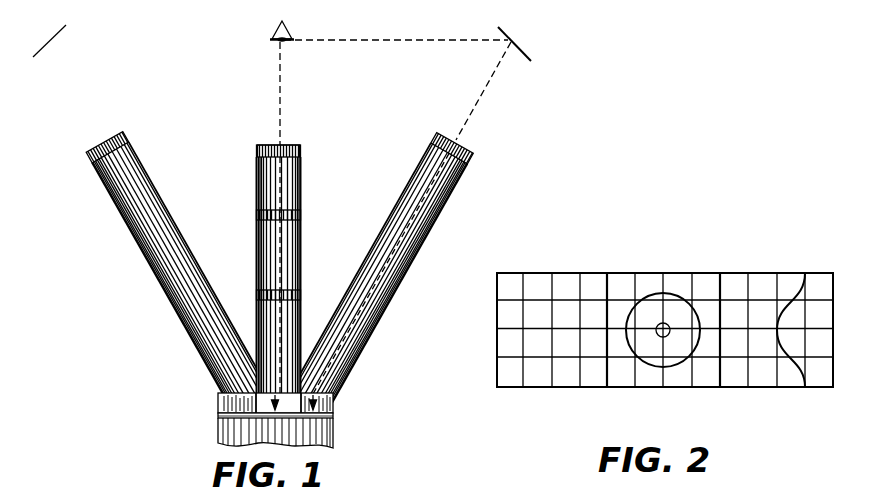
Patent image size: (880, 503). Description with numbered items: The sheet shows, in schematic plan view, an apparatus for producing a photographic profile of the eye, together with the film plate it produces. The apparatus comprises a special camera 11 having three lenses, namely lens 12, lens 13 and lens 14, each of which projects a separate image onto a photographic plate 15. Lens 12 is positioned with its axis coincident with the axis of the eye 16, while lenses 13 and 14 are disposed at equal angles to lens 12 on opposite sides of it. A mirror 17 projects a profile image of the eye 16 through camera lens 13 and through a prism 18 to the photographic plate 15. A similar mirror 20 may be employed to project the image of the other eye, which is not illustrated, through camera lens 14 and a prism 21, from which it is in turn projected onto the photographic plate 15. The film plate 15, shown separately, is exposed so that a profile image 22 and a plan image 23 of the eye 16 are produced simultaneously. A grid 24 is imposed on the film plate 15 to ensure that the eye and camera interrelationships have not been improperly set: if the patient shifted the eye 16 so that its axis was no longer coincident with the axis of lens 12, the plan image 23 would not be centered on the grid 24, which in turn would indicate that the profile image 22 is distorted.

In FIG. 1, the special camera 11 is at (203, 441).
In FIG. 1, the lens 12 is at (283, 256).
In FIG. 1, the lens 13 is at (427, 238).
In FIG. 1, the lens 14 is at (165, 237).
In FIG. 1, the photographic plate 15 is at (333, 416).
In FIG. 2, the photographic plate 15 is at (628, 262).
In FIG. 1, the eye 16 is at (276, 22).
In FIG. 1, the mirror 17 is at (518, 46).
In FIG. 1, the prism 18 is at (333, 407).
In FIG. 1, the mirror 20 is at (45, 43).
In FIG. 1, the prism 21 is at (232, 386).
In FIG. 2, the profile image 22 is at (793, 306).
In FIG. 2, the plan image 23 is at (671, 295).
In FIG. 2, the grid 24 is at (569, 283).